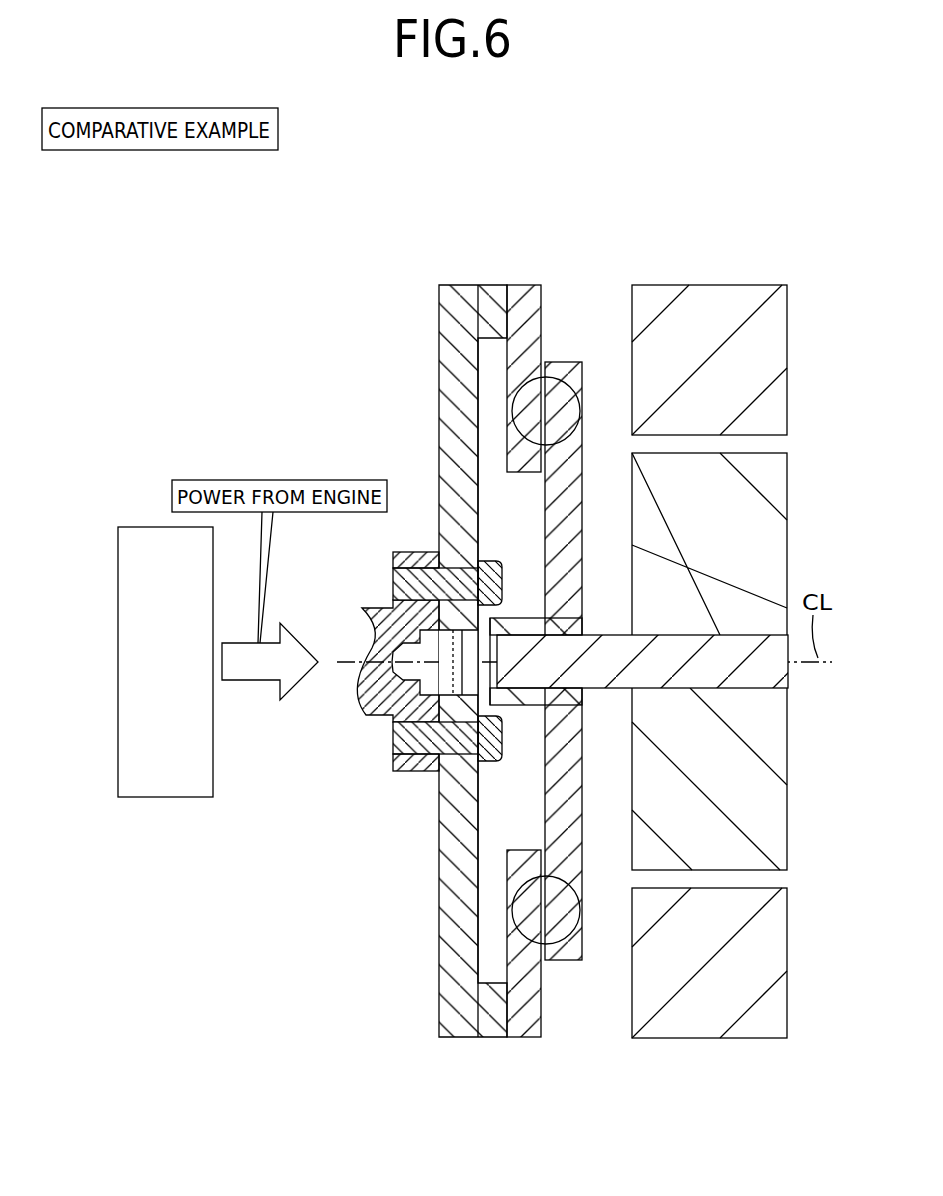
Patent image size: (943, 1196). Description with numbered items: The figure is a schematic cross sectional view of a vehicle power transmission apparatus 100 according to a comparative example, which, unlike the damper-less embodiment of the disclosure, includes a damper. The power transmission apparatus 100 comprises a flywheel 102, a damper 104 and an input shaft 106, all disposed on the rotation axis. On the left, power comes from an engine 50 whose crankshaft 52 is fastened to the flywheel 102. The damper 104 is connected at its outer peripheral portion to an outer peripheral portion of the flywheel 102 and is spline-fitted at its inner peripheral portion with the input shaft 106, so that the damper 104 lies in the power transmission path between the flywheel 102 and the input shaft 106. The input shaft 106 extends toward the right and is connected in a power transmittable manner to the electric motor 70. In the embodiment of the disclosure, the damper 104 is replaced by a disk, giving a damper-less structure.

The engine 50 is at (143, 787).
The crankshaft 52 is at (365, 576).
The electric motor 70 is at (714, 258).
The power transmission apparatus 100 is at (613, 585).
The flywheel 102 is at (466, 258).
The damper 104 is at (548, 258).
The input shaft 106 is at (607, 612).